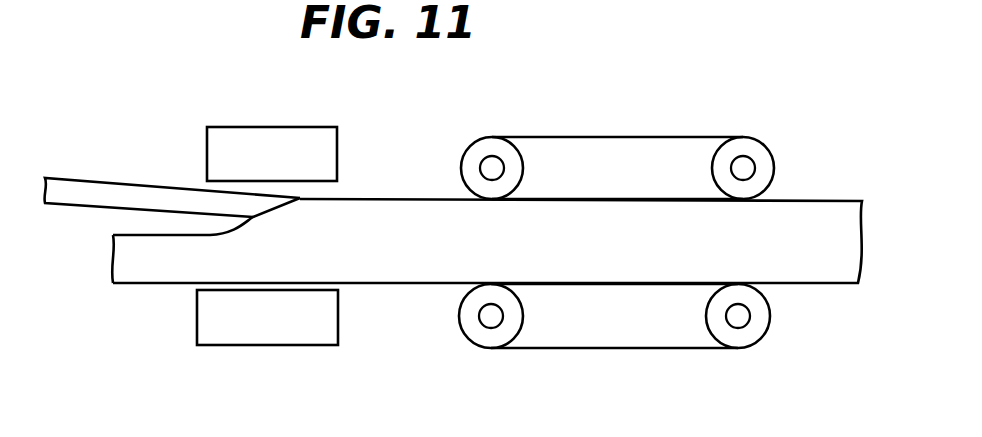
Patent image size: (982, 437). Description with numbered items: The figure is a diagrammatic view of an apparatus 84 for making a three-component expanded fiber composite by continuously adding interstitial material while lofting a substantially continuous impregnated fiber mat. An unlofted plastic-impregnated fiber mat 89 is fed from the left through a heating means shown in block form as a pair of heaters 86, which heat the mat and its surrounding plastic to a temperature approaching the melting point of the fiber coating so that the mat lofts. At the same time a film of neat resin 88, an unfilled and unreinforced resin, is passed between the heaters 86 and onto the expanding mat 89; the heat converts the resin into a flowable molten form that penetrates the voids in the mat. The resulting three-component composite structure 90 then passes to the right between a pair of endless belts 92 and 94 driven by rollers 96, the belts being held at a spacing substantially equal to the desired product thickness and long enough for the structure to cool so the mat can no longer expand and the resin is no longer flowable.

The apparatus 84 is at (617, 121).
The heaters 86 is at (280, 166).
The film of neat resin 88 is at (93, 180).
The plastic-impregnated fiber mat 89 is at (113, 243).
The three-component composite structure 90 is at (444, 253).
The endless belt 92 is at (695, 138).
The endless belt 94 is at (677, 350).
The rollers 96 is at (490, 168).